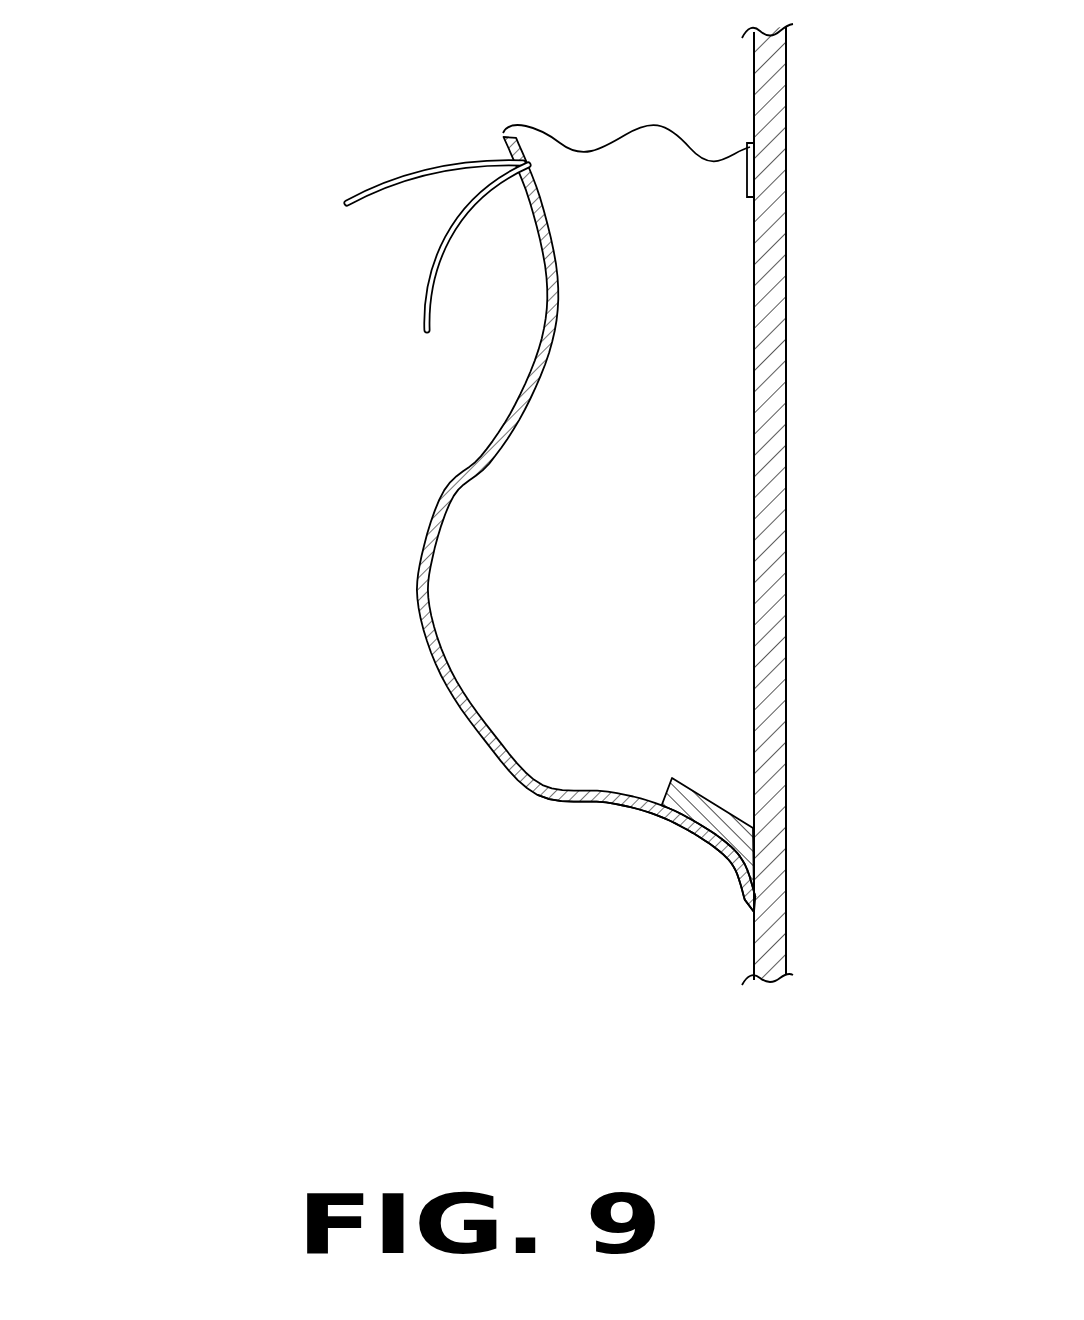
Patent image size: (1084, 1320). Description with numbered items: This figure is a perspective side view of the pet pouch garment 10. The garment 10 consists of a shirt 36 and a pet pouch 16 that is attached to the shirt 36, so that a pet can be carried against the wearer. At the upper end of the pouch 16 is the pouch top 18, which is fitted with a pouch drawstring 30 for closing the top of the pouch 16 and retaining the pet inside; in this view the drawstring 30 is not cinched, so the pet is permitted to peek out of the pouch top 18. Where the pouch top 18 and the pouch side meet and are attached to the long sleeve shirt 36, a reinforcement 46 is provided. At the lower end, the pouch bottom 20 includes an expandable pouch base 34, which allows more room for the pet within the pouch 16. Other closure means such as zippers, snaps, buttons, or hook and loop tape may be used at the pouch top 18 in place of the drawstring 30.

The pet pouch garment 10 is at (257, 368).
The pet pouch 16 is at (448, 495).
The pouch top 18 is at (620, 130).
The pouch bottom 20 is at (633, 807).
The pouch drawstring 30 is at (420, 280).
The expandable pouch base 34 is at (723, 812).
The shirt 36 is at (786, 297).
The reinforcement 46 is at (753, 183).